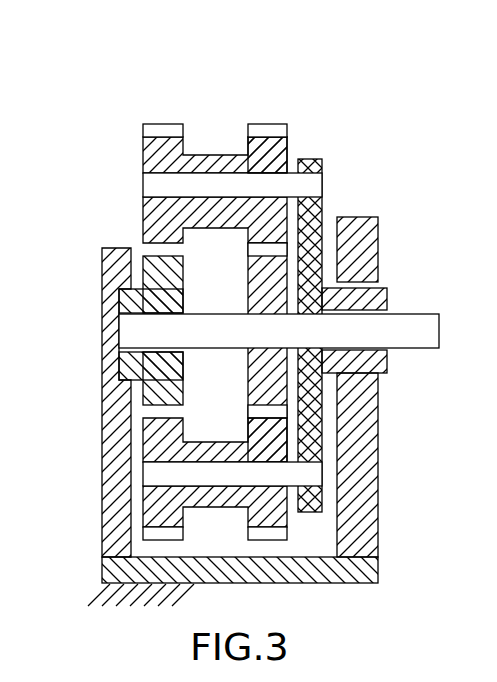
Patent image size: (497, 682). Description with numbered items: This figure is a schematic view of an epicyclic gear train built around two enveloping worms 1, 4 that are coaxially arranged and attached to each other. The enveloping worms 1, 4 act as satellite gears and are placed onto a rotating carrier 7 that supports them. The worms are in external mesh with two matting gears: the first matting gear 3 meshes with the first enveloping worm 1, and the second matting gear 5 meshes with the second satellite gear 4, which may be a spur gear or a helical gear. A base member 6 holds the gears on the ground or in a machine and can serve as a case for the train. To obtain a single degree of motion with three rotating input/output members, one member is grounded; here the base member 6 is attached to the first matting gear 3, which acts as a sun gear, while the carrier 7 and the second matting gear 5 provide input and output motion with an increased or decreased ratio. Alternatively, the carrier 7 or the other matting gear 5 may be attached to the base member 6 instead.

The enveloping worm 1 is at (157, 152).
The first matting gear 3 is at (160, 282).
The enveloping worm 4 is at (272, 162).
The second matting gear 5 is at (315, 283).
The base member 6 is at (110, 448).
The carrier 7 is at (325, 230).